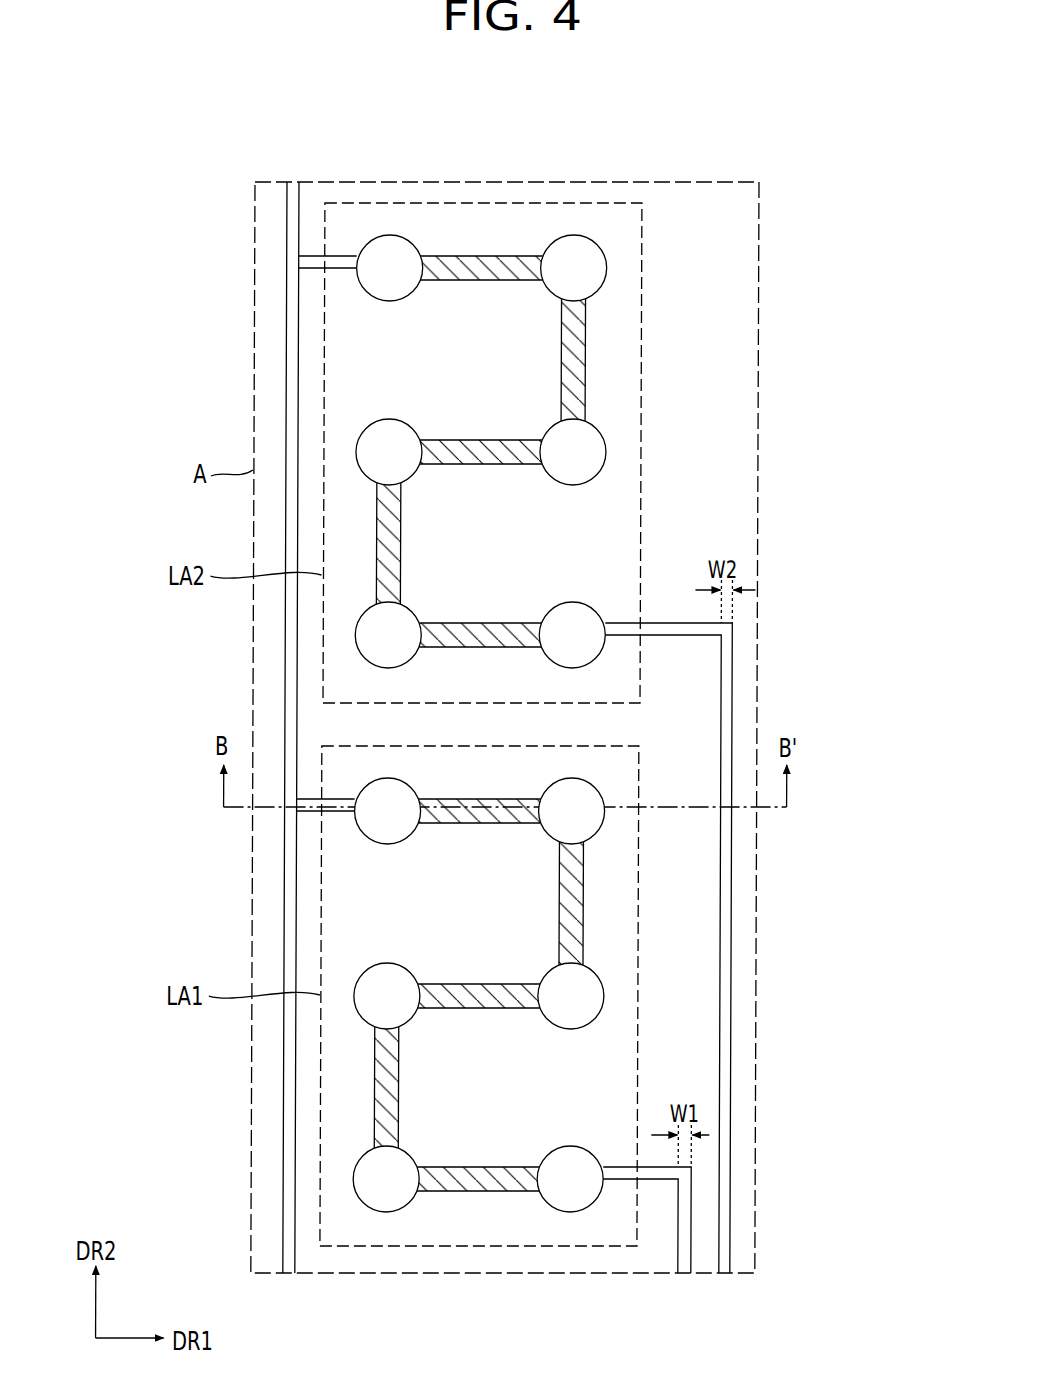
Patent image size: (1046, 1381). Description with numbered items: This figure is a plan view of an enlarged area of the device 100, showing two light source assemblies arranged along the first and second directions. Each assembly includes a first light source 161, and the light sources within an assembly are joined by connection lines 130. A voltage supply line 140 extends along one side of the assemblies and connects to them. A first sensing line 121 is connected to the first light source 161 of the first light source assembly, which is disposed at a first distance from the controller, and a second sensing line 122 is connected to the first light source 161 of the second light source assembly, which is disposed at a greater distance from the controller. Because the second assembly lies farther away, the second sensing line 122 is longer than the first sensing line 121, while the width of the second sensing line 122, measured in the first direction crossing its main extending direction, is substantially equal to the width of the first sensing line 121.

The display device 100 is at (735, 146).
The first sensing line 121 is at (684, 1264).
The second sensing line 122 is at (724, 1263).
The connection line 130 is at (478, 1183).
The voltage supply line 140 is at (288, 1263).
The first light source 161 is at (580, 640).